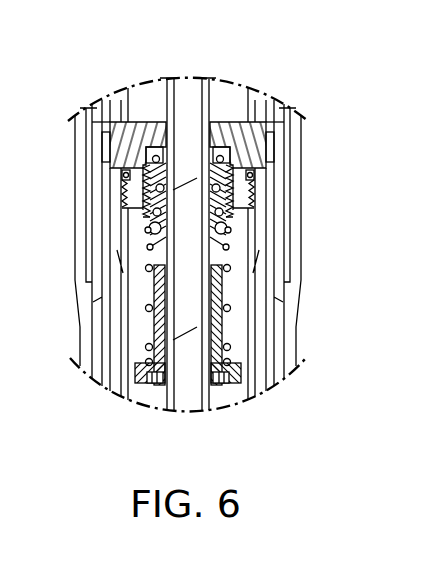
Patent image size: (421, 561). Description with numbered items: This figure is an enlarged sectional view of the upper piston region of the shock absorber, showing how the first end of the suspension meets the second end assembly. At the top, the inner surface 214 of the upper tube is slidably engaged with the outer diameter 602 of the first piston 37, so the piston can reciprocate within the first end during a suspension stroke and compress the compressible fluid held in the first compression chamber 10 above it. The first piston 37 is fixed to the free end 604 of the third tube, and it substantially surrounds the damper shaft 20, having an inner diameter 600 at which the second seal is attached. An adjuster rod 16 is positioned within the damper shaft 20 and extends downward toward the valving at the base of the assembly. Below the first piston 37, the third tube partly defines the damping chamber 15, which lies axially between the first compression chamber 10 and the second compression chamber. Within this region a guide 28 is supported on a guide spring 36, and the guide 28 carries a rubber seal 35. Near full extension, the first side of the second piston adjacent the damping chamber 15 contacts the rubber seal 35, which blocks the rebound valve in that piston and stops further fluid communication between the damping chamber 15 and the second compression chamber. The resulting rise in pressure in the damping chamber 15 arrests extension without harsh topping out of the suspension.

The first compression chamber 10 is at (128, 93).
The damping chamber 15 is at (150, 398).
The adjuster rod 16 is at (188, 93).
The damper shaft 20 is at (207, 90).
The guide 28 is at (222, 337).
The rubber seal 35 is at (218, 384).
The guide spring 36 is at (228, 247).
The first piston 37 is at (255, 143).
The inner surface 214 is at (100, 107).
The inner diameter 600 is at (160, 148).
The outer diameter 602 is at (102, 138).
The free end 604 is at (272, 165).